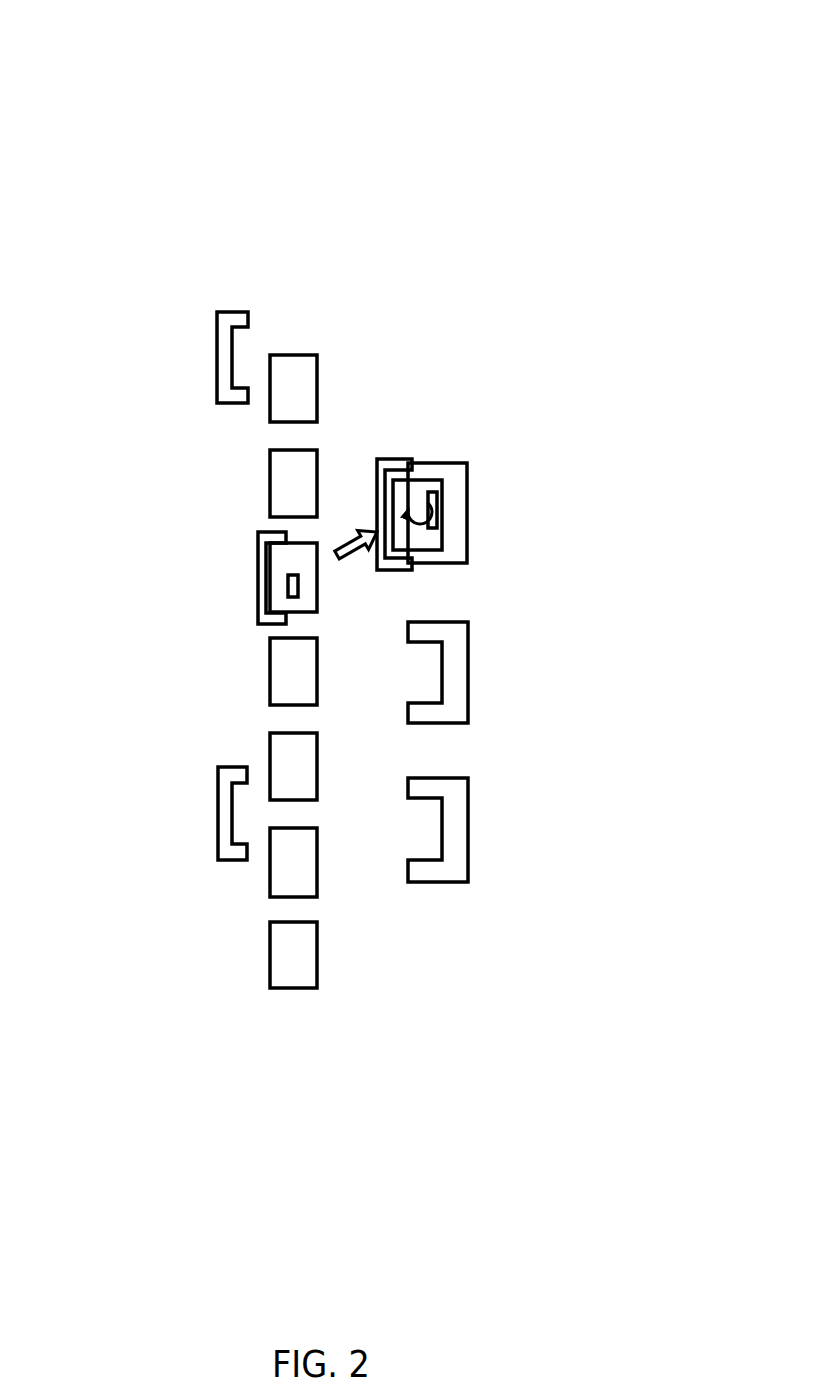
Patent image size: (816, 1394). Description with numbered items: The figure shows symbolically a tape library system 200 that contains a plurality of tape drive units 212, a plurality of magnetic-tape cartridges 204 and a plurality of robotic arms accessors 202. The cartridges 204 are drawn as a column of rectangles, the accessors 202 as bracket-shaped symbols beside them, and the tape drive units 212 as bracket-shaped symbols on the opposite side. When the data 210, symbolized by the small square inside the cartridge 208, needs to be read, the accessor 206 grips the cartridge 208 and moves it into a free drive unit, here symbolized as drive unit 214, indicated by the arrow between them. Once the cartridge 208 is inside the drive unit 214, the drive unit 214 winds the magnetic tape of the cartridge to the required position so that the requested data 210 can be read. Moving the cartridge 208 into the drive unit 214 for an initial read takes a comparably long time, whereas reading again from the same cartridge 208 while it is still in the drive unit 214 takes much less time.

The tape library system 200 is at (663, 67).
The robotic arms accessors 202 is at (214, 347).
The magnetic-tape cartridges 204 is at (282, 1024).
The accessor 206 is at (252, 585).
The cartridge 208 is at (314, 536).
The data 210 is at (303, 586).
The tape drive units 212 is at (445, 899).
The drive unit 214 is at (471, 513).